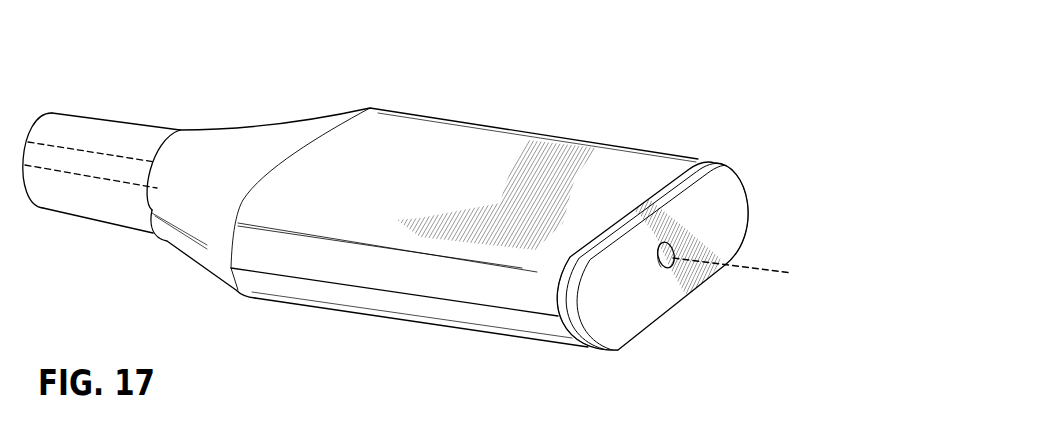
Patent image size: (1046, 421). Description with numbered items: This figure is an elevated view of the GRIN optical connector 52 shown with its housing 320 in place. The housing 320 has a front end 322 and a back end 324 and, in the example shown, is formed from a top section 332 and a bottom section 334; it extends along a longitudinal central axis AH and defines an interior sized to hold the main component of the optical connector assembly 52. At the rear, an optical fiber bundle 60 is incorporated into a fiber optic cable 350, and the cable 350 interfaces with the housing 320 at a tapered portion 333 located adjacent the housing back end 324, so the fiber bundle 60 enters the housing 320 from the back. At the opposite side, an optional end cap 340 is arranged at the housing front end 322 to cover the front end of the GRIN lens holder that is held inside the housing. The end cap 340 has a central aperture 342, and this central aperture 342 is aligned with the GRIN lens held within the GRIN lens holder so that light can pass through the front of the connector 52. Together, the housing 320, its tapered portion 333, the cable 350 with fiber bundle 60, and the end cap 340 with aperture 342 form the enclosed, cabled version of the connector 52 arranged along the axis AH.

The GRIN optical connector 52 is at (408, 92).
The optical fiber bundle 60 is at (77, 173).
The housing 320 is at (542, 155).
The front end 322 is at (757, 182).
The back end 324 is at (175, 119).
The top section 332 is at (488, 153).
The tapered portion 333 is at (223, 152).
The bottom section 334 is at (347, 310).
The end cap 340 is at (738, 166).
The central aperture 342 is at (670, 262).
The fiber optic cable 350 is at (137, 217).
The longitudinal central axis AH is at (790, 273).